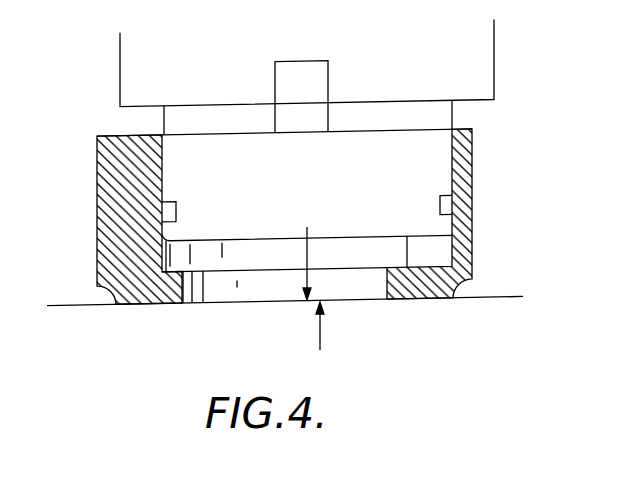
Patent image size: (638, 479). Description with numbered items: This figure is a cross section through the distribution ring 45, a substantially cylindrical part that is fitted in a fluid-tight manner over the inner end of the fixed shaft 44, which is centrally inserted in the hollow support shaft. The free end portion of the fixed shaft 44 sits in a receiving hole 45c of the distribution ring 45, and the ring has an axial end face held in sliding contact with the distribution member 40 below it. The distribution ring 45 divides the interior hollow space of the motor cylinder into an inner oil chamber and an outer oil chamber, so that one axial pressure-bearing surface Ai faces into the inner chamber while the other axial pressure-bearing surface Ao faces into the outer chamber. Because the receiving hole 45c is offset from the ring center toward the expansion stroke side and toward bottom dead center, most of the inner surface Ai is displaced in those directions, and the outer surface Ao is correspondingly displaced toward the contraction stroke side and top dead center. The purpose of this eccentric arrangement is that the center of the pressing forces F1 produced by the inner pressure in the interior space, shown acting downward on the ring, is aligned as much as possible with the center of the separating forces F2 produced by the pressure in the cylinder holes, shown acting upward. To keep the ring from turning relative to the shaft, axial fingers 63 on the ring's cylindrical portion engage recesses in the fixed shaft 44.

The fixed shaft 44 is at (118, 53).
The axial fingers 63 is at (328, 67).
The distribution ring 45 is at (96, 170).
The axial pressure-bearing surface Ao is at (122, 136).
The receiving hole 45c is at (453, 198).
The axial pressure-bearing surface Ai is at (407, 237).
The distribution member 40 is at (488, 298).
The pressing forces F1 is at (306, 253).
The separating forces F2 is at (332, 338).